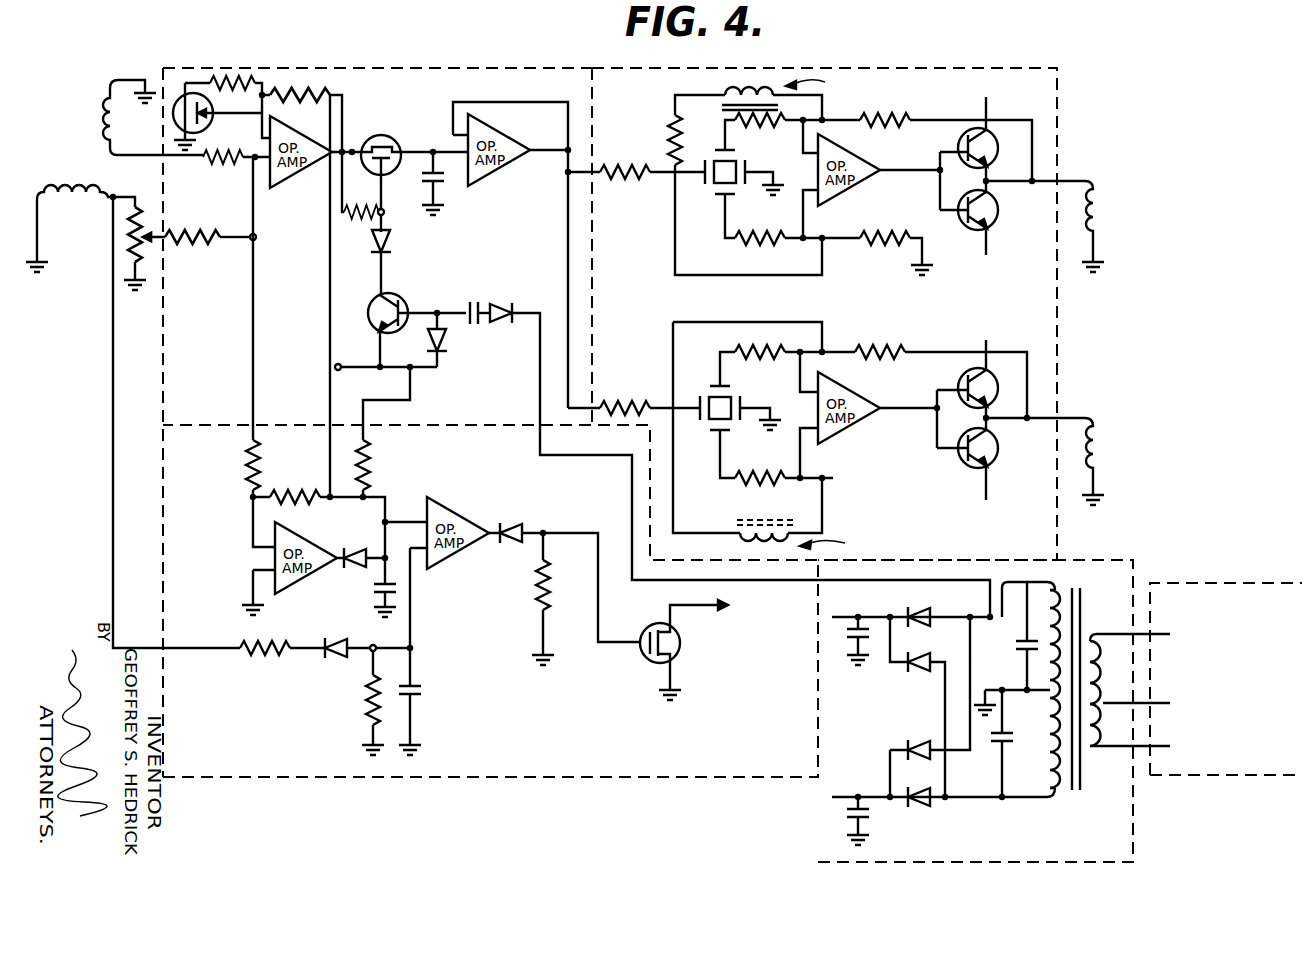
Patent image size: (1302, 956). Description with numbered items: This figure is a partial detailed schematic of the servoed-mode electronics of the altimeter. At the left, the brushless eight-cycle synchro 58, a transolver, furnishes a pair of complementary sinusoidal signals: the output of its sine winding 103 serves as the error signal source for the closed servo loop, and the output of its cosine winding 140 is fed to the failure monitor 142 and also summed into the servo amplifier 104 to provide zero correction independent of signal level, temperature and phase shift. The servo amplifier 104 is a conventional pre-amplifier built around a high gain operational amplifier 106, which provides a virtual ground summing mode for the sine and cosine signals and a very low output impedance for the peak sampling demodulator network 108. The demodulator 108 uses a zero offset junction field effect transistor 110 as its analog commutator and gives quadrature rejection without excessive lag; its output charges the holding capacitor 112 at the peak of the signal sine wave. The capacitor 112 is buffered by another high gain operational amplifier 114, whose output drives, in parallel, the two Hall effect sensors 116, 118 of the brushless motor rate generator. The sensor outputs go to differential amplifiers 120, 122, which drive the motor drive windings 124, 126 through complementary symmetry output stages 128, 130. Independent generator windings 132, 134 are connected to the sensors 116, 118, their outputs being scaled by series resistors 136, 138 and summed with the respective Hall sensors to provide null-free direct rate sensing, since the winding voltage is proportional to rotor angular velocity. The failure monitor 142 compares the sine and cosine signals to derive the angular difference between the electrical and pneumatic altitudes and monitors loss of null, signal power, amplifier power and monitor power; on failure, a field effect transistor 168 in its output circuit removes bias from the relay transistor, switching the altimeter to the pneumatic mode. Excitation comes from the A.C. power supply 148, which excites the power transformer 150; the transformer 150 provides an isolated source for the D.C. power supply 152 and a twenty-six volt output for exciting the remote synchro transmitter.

The sine winding 103 is at (106, 110).
The cosine winding 140 is at (84, 190).
The servo amplifier 104 is at (468, 68).
The operational amplifier 106 is at (295, 183).
The peak sampling demodulator network 108 is at (372, 140).
The zero offset junction field effect transistor 110 is at (392, 142).
The holding capacitor 112 is at (452, 183).
The operational amplifier 114 is at (503, 138).
The Hall effect sensor 116 is at (720, 188).
The Hall effect sensor 118 is at (710, 397).
The differential amplifier 120 is at (840, 190).
The differential amplifier 122 is at (860, 396).
The motor drive winding 124 is at (1100, 212).
The motor drive winding 126 is at (1098, 446).
The complementary symmetry output stage 128 is at (1000, 195).
The complementary symmetry output stage 130 is at (1002, 441).
The generator winding 132 is at (757, 78).
The generator winding 134 is at (760, 522).
The series resistor 136 is at (630, 186).
The series resistor 138 is at (632, 400).
The failure monitor 142 is at (434, 778).
The A.C. power supply 148 is at (1262, 588).
The power transformer 150 is at (1087, 602).
The D.C. power supply 152 is at (1137, 805).
The brushless eight-cycle synchro 58 is at (1062, 320).
The field effect transistor 168 is at (650, 660).